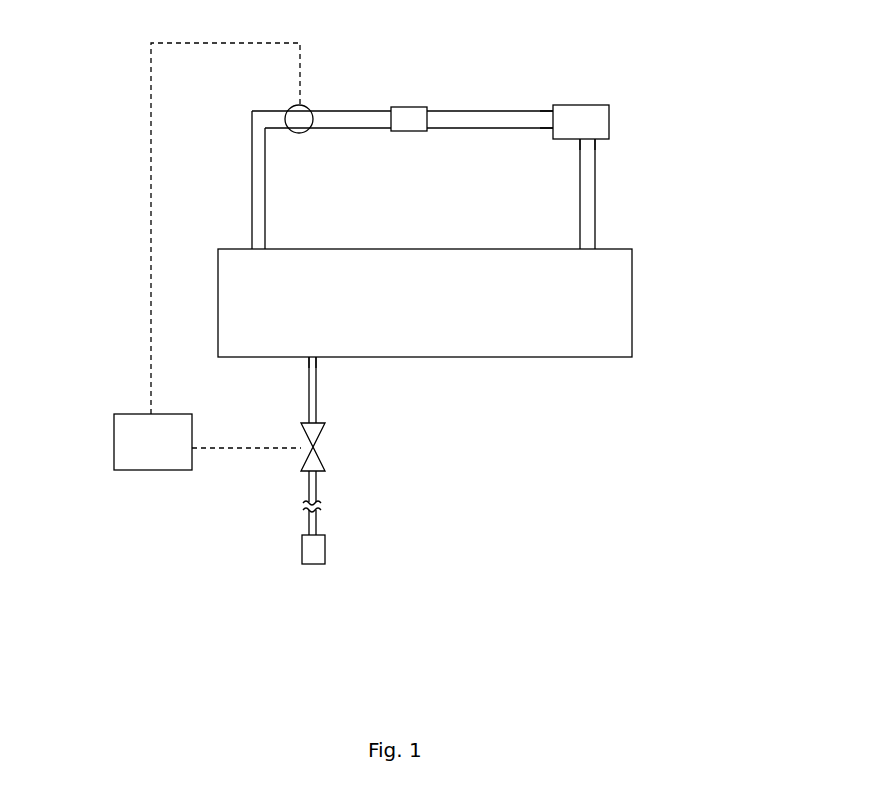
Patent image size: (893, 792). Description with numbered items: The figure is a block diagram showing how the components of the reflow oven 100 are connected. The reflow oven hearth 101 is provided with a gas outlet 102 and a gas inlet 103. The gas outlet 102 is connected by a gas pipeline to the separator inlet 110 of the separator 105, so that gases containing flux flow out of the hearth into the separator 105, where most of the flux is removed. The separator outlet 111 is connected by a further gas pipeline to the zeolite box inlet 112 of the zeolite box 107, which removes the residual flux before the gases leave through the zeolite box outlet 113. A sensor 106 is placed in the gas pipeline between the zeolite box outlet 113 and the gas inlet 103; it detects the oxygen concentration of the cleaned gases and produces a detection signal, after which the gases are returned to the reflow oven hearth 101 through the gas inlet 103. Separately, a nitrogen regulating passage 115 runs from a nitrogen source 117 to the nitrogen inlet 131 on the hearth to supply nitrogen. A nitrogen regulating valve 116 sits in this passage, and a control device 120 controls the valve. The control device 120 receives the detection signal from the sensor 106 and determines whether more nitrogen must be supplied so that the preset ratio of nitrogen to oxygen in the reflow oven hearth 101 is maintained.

The reflow oven 100 is at (590, 476).
The reflow oven hearth 101 is at (620, 320).
The gas outlet 102 is at (596, 248).
The gas inlet 103 is at (265, 248).
The separator 105 is at (580, 125).
The sensor 106 is at (305, 106).
The zeolite box 107 is at (410, 107).
The separator inlet 110 is at (590, 138).
The separator outlet 111 is at (553, 118).
The zeolite box inlet 112 is at (432, 116).
The zeolite box outlet 113 is at (392, 118).
The nitrogen regulating passage 115 is at (310, 392).
The nitrogen regulating valve 116 is at (318, 447).
The nitrogen source 117 is at (316, 554).
The control device 120 is at (128, 430).
The nitrogen inlet 131 is at (317, 358).